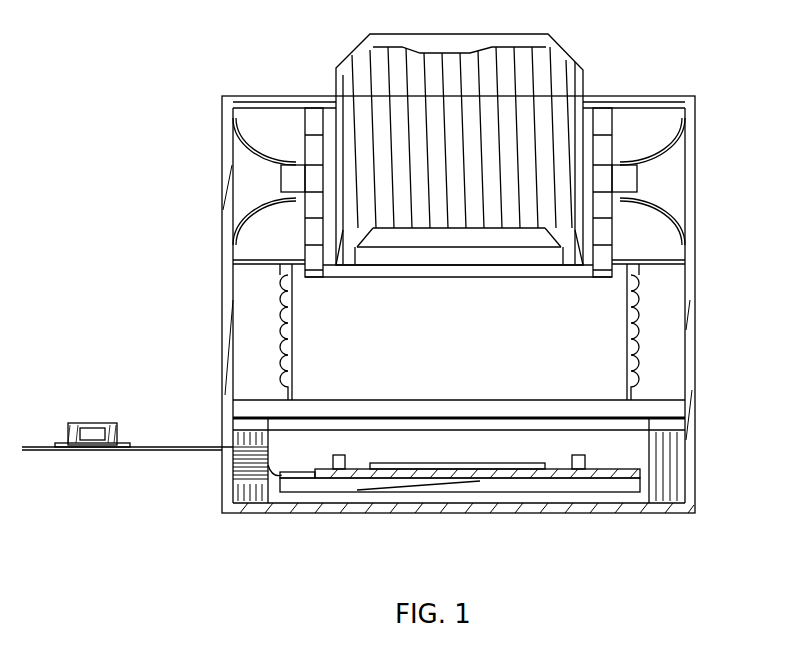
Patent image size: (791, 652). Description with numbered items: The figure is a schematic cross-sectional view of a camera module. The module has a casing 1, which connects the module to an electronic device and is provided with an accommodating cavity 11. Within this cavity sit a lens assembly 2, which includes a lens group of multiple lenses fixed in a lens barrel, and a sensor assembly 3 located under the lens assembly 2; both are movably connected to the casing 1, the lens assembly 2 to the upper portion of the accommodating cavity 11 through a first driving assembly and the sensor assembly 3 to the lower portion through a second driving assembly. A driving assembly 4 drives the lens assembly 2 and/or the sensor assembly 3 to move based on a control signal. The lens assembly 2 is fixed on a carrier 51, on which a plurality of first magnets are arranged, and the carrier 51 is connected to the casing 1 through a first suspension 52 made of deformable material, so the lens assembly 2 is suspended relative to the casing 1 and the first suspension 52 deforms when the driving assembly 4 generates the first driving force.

The casing 1 is at (699, 310).
The lens assembly 2 is at (548, 96).
The sensor assembly 3 is at (603, 475).
The driving assembly 4 is at (292, 322).
The accommodating cavity 11 is at (660, 193).
The carrier 51 is at (290, 178).
The first suspension 52 is at (250, 222).